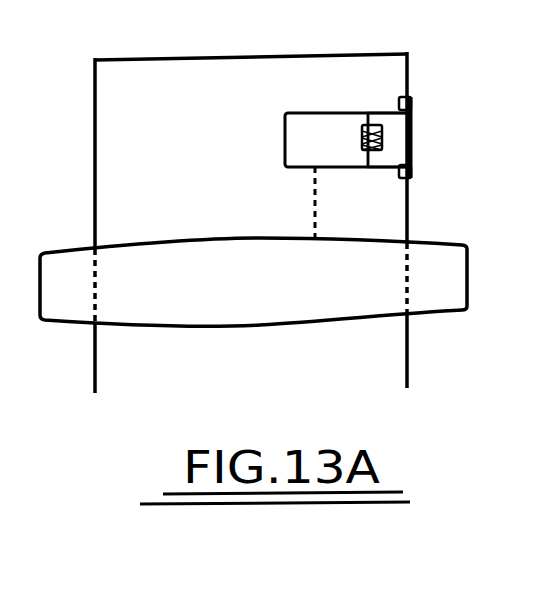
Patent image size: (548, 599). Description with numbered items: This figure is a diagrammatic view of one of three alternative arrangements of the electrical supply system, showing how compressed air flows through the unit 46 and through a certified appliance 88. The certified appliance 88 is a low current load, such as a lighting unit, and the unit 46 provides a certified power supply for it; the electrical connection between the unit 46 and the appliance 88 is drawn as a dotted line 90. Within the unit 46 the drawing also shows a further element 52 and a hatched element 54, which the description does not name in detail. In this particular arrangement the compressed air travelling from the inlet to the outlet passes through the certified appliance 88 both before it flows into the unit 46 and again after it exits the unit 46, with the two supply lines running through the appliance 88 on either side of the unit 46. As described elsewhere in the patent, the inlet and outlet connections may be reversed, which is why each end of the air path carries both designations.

The unit 46 is at (351, 135).
The contact region 52 is at (384, 138).
The sensor element 54 is at (348, 135).
The certified appliance 88 is at (468, 285).
The dotted lines 90 is at (320, 205).